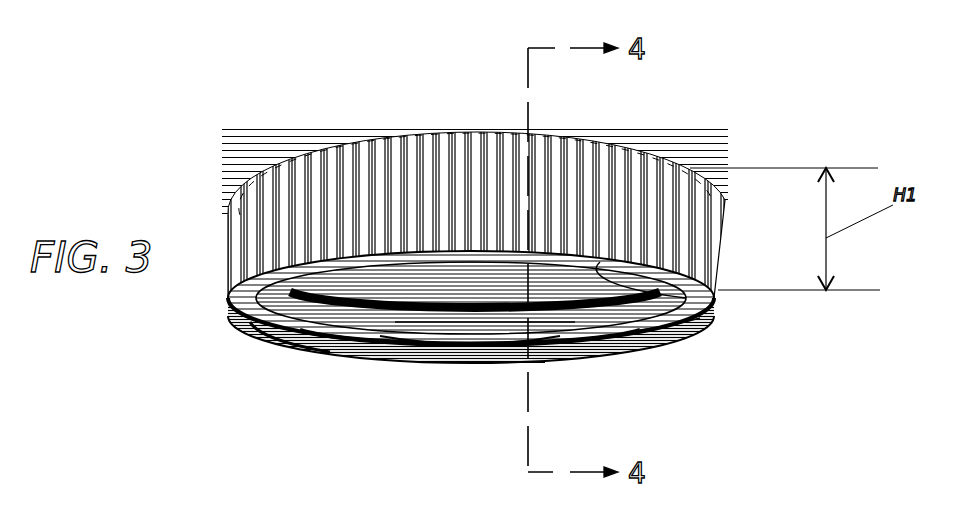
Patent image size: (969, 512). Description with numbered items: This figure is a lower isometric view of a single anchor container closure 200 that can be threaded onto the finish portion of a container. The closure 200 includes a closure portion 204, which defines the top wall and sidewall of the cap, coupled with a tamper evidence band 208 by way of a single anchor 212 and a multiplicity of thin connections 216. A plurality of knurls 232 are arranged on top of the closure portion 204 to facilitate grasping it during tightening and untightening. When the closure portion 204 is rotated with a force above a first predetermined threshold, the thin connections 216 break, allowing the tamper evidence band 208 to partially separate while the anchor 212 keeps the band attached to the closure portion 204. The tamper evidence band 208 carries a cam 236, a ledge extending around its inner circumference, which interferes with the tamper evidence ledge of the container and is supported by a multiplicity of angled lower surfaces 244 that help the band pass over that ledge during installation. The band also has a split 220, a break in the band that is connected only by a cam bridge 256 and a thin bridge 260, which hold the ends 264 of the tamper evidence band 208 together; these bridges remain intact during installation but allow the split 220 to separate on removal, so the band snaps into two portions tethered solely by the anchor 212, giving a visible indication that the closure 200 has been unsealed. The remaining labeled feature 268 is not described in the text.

The single anchor container closure 200 is at (720, 109).
The closure portion 204 is at (230, 222).
The tamper evidence band 208 is at (708, 309).
The single anchor 212 is at (418, 253).
The thin connections 216 is at (530, 257).
The split 220 is at (512, 392).
The knurls 232 is at (278, 155).
The cam 236 is at (408, 338).
The angled lower surfaces 244 is at (355, 347).
The cam bridge 256 is at (532, 340).
The thin bridge 260 is at (531, 360).
The ends of the tamper evidence band 264 is at (522, 333).
The top surface of flange 268 is at (477, 253).